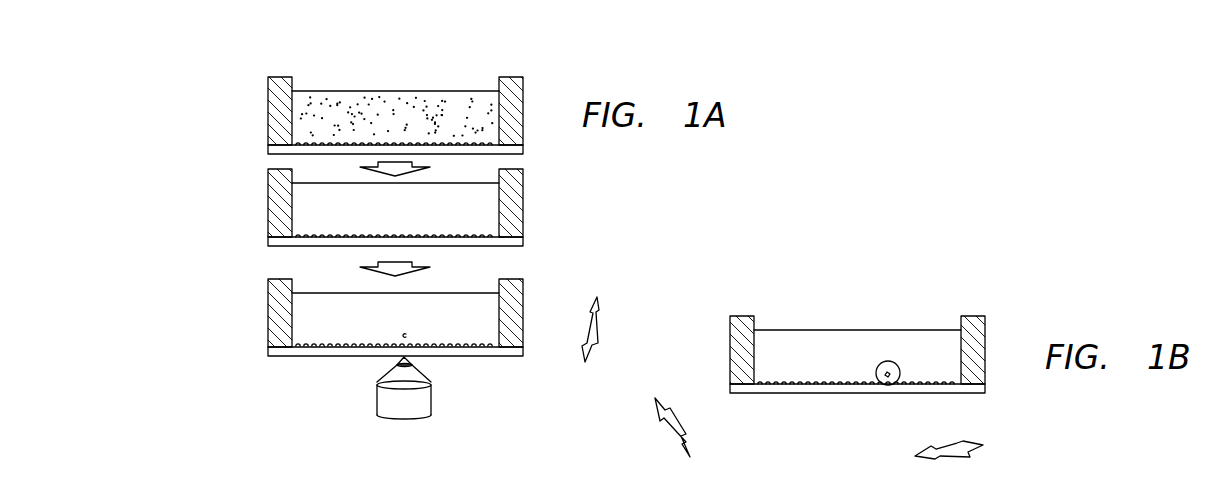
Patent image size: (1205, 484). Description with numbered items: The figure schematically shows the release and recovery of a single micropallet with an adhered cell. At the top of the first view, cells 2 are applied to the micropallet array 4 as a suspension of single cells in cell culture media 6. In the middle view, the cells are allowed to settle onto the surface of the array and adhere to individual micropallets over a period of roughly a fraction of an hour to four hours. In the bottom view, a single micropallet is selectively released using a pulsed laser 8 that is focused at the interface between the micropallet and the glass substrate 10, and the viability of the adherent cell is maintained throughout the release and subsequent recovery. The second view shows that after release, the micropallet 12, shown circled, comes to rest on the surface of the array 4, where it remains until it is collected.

In FIG. 1A, the cells 2 is at (367, 103).
In FIG. 1A, the micropallet array 4 is at (490, 132).
In FIG. 1B, the micropallet array 4 is at (803, 383).
In FIG. 1A, the cell culture media 6 is at (310, 100).
In FIG. 1A, the pulsed laser 8 is at (431, 395).
In FIG. 1A, the glass substrate 10 is at (308, 357).
In FIG. 1B, the micropallet 12 is at (886, 386).